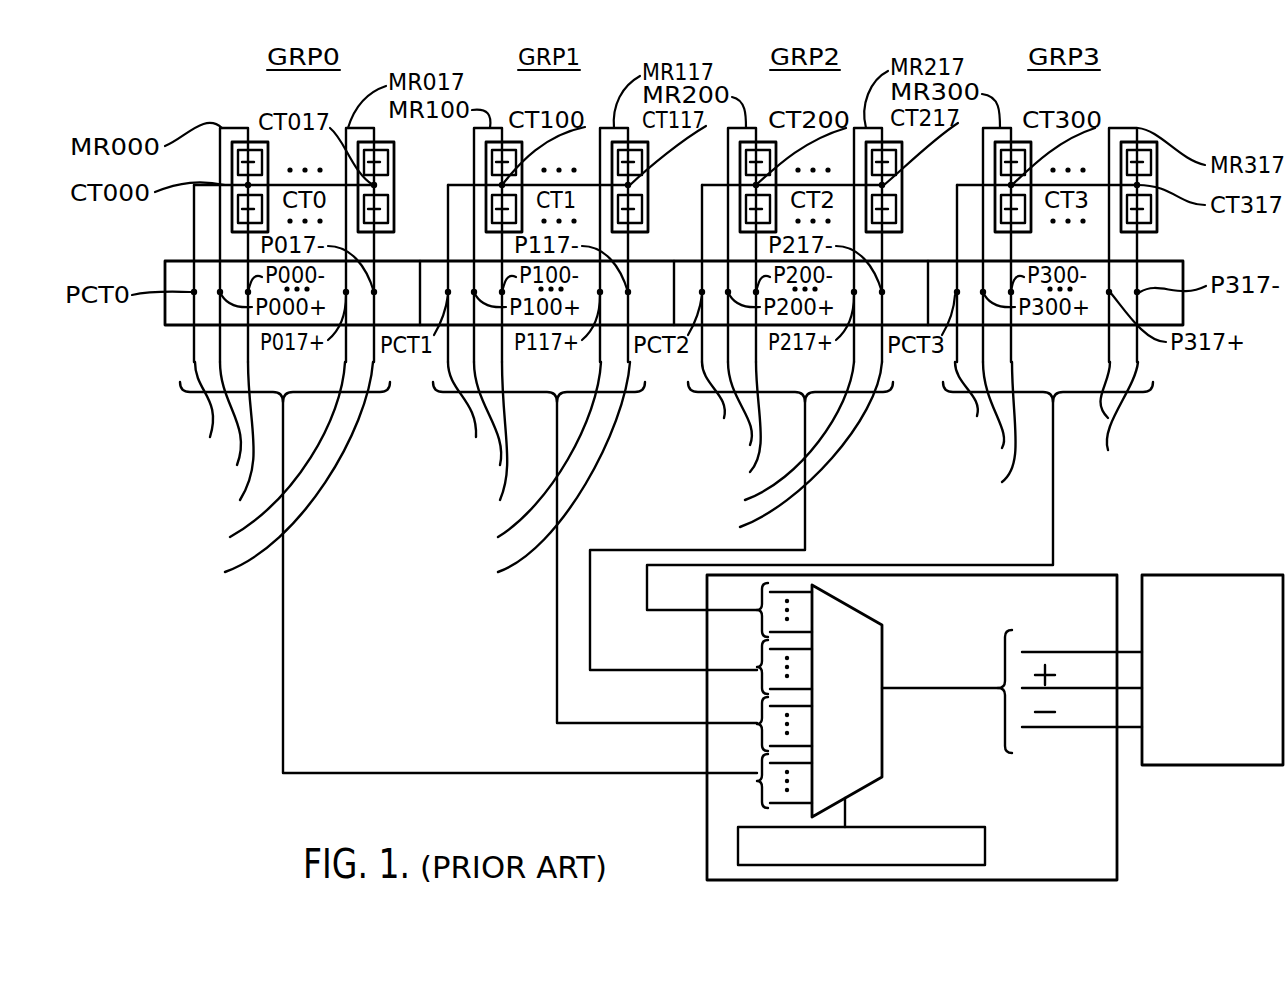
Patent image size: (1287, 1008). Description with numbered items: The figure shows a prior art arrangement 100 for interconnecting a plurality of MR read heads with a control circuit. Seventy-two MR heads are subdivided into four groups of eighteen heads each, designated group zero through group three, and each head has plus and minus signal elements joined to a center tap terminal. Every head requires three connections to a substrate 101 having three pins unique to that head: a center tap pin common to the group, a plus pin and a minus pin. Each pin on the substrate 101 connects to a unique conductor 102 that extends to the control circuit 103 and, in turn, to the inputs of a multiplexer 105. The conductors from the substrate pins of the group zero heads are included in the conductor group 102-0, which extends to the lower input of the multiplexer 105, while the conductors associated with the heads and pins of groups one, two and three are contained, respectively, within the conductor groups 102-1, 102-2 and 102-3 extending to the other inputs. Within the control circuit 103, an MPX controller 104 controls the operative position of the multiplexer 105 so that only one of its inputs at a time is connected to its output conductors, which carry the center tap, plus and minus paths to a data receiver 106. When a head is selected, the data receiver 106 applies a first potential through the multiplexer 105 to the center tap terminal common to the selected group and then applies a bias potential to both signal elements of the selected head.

The prior art data acquisition system 100 is at (205, 764).
The substrate 101 is at (165, 325).
The conductor 102 is at (666, 585).
The conductor group 102-0 is at (600, 775).
The conductor group 102-1 is at (652, 725).
The conductor group 102-2 is at (674, 672).
The conductor group 102-3 is at (692, 612).
The control circuit 103 is at (953, 727).
The MPX controller 104 is at (985, 843).
The multiplexer 105 is at (867, 743).
The data receiver 106 is at (1213, 575).